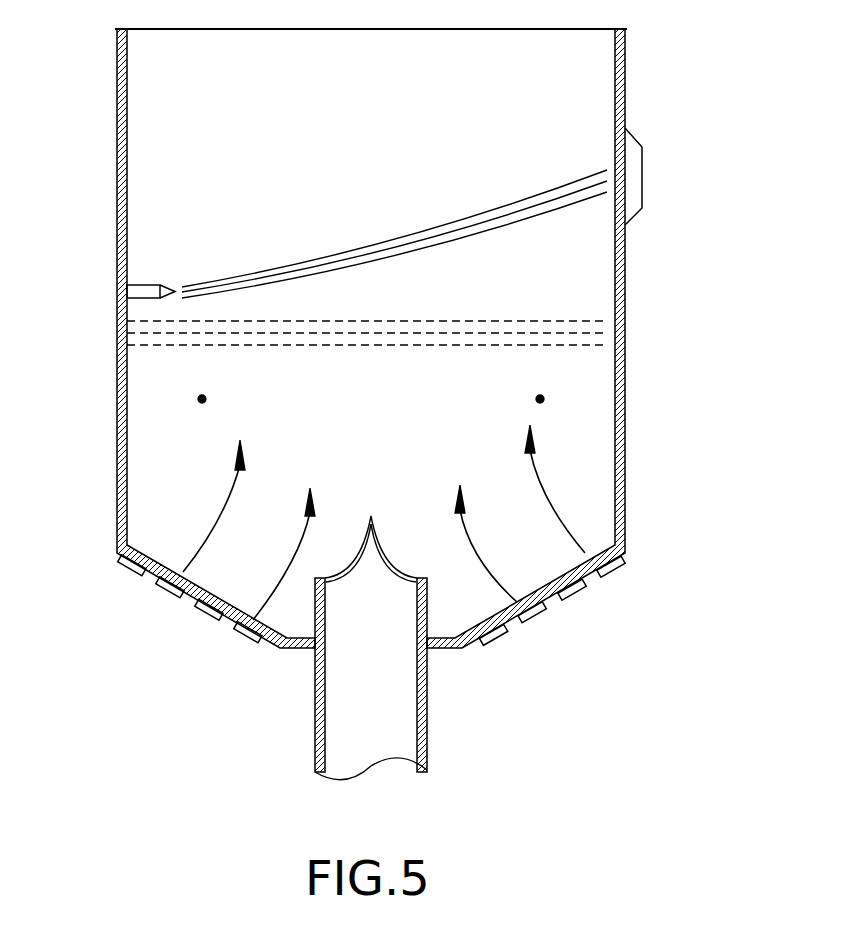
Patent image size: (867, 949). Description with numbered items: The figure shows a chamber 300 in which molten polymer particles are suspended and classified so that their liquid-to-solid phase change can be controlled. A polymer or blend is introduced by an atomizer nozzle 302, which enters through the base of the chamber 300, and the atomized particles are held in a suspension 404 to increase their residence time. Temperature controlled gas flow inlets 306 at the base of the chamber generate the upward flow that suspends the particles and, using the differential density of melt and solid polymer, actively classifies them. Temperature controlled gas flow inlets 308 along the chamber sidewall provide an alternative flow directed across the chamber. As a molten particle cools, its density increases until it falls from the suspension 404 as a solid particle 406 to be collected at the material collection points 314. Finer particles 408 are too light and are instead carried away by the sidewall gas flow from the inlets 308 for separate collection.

The chamber 300 is at (625, 248).
The atomizer nozzle 302 is at (356, 556).
The temperature controlled gas flow inlets 306 is at (163, 594).
The temperature controlled gas flow inlets 308 is at (150, 285).
The material collection points 314 is at (642, 180).
The suspension 404 is at (632, 318).
The solid particle 406 is at (282, 431).
The finer particles 408 is at (313, 268).